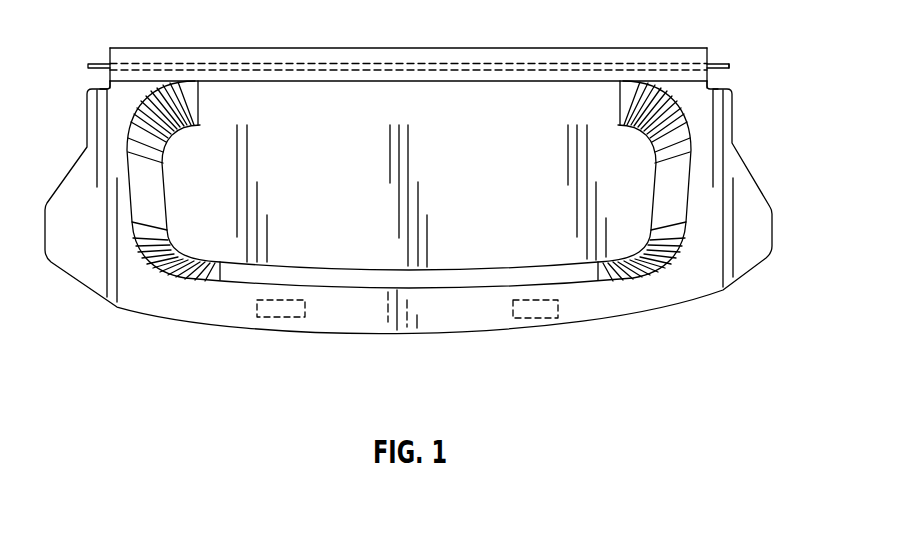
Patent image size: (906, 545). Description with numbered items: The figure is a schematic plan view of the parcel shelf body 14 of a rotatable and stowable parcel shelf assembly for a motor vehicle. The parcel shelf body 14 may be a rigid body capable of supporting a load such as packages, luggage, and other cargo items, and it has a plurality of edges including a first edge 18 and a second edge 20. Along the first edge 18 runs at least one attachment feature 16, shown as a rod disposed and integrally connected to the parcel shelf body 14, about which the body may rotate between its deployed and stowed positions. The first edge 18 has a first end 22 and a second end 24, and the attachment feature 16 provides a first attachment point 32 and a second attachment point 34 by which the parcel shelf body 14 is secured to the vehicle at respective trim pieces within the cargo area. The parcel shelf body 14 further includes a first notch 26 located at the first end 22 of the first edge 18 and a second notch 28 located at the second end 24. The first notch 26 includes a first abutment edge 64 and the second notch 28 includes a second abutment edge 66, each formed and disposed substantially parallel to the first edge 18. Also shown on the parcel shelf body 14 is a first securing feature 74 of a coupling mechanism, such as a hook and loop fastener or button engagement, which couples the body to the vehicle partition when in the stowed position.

The parcel shelf body 14 is at (437, 212).
The attachment feature 16 is at (726, 60).
The first edge 18 is at (386, 47).
The second edge 20 is at (185, 320).
The first end 22 is at (111, 47).
The second end 24 is at (706, 47).
The first notch 26 is at (96, 84).
The second notch 28 is at (722, 84).
The first attachment point 32 is at (100, 62).
The second attachment point 34 is at (716, 63).
The first abutment edge 64 is at (103, 97).
The second abutment edge 66 is at (716, 94).
The first securing feature 74 is at (287, 318).